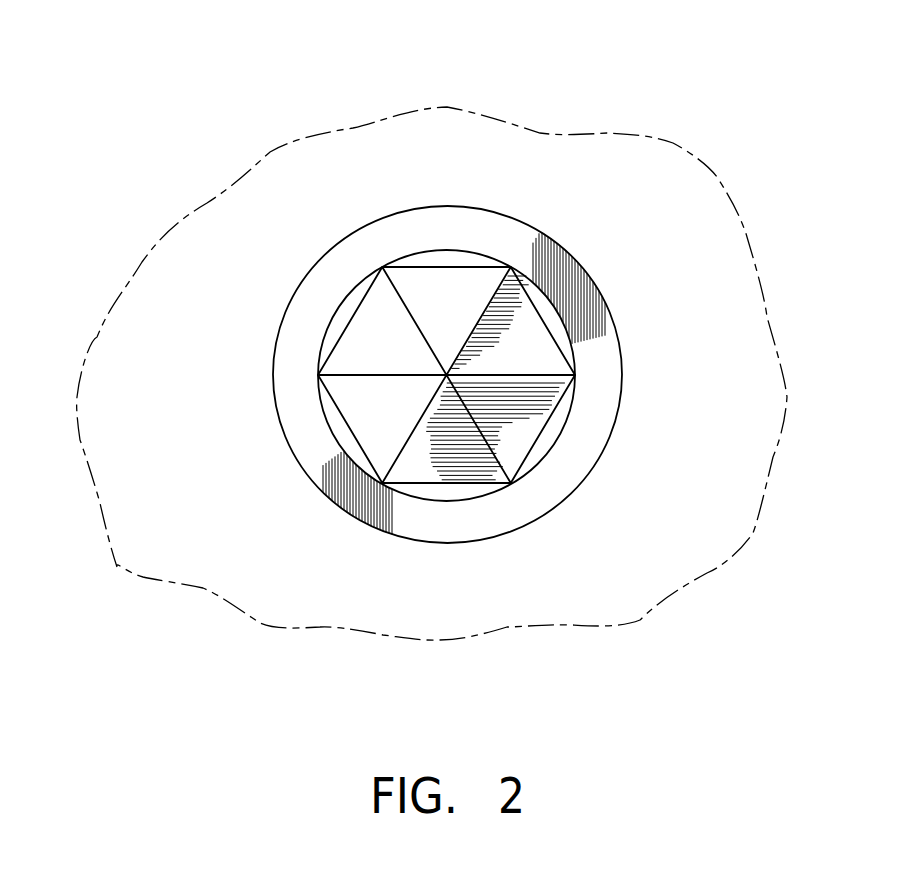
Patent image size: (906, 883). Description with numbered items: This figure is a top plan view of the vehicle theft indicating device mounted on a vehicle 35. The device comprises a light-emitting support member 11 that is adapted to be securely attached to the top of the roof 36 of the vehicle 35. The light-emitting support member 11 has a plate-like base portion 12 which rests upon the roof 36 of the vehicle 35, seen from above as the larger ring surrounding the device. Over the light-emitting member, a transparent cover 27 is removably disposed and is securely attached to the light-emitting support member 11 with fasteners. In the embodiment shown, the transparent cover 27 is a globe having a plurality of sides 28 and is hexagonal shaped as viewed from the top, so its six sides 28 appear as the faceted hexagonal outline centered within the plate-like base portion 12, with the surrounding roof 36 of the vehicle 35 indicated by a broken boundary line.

The light-emitting support member 11 is at (288, 352).
The plate-like base portion 12 is at (322, 470).
The transparent cover 27 is at (512, 443).
The sides 28 is at (553, 417).
The vehicle 35 is at (737, 297).
The roof 36 is at (732, 463).